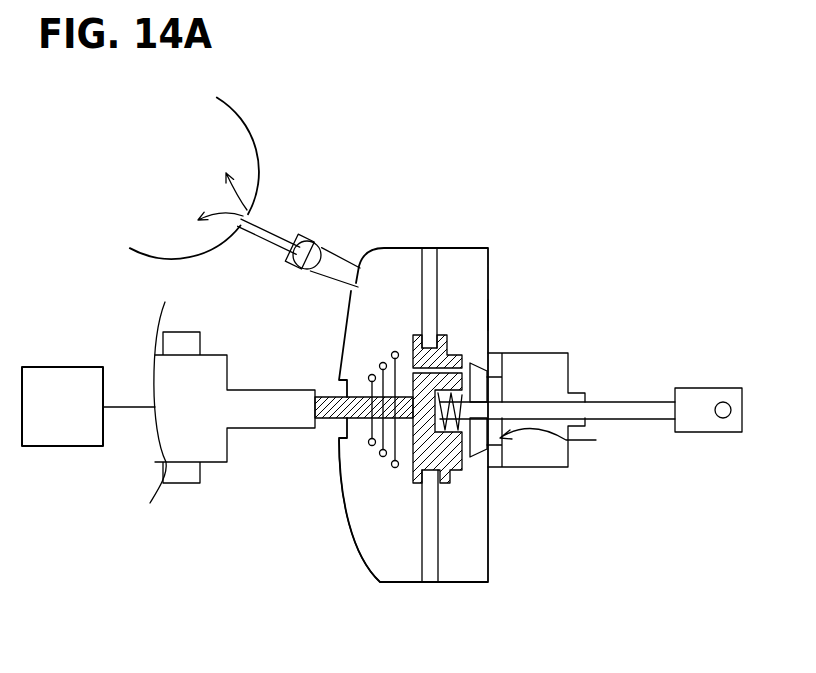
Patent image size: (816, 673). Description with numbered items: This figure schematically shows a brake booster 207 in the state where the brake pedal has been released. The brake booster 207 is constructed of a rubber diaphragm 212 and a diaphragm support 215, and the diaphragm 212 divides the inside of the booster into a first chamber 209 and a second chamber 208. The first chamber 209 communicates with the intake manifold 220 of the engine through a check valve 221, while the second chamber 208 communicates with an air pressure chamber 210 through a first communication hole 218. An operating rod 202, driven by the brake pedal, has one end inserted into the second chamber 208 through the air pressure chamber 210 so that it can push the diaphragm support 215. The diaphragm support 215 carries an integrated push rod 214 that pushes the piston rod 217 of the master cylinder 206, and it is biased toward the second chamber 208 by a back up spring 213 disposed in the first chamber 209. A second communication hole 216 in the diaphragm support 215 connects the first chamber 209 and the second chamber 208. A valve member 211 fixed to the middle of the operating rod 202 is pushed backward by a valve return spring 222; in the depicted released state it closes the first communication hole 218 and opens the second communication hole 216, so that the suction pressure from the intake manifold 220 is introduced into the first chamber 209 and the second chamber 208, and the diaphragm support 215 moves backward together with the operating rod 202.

The operating rod 202 is at (620, 402).
The master cylinder 206 is at (62, 447).
The brake booster 207 is at (470, 248).
The second chamber 208 is at (488, 290).
The first chamber 209 is at (349, 548).
The air pressure chamber 210 is at (548, 468).
The valve member 211 is at (492, 390).
The rubber diaphragm 212 is at (437, 267).
The back up spring 213 is at (370, 441).
The push rod 214 is at (318, 398).
The diaphragm support 215 is at (457, 472).
The second communication hole 216 is at (413, 362).
The piston rod 217 is at (265, 421).
The first communication hole 218 is at (567, 443).
The intake manifold 220 is at (247, 153).
The check valve 221 is at (324, 248).
The valve return spring 222 is at (468, 445).